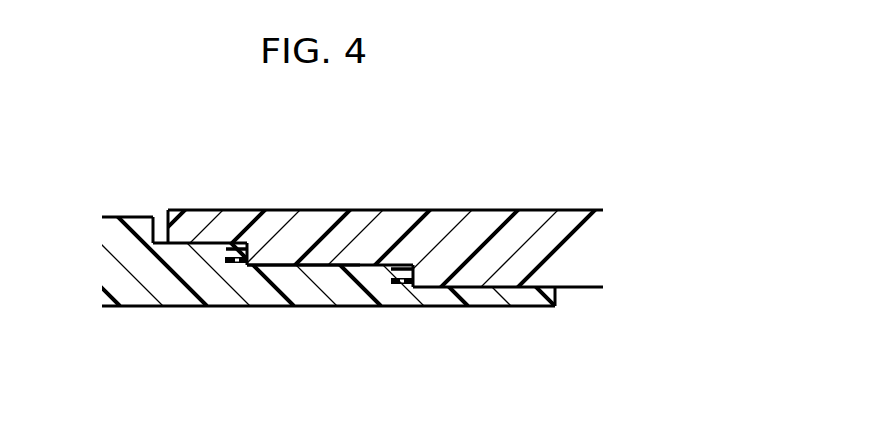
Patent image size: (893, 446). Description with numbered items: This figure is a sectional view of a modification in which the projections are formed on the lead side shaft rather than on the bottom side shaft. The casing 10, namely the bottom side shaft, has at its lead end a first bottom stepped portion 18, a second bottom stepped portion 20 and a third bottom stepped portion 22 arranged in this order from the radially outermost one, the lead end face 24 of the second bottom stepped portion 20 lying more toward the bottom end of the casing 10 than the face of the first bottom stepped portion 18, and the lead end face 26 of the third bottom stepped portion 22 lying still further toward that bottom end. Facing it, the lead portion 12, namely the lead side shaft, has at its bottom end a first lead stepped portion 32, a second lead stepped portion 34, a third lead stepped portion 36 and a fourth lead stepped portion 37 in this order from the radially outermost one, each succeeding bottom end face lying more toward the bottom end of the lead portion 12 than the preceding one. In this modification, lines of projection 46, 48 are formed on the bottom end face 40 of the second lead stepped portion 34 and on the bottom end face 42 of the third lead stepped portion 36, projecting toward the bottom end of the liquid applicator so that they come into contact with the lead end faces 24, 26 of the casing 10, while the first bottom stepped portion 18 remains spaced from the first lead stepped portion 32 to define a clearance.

The casing 10 is at (542, 209).
The lead portion 12 is at (143, 309).
The first bottom stepped portion 18 is at (177, 230).
The second bottom stepped portion 20 is at (295, 252).
The third bottom stepped portion 22 is at (485, 277).
The lead end face of the second bottom stepped portion 24 is at (231, 249).
The lead end face of the third bottom stepped portion 26 is at (404, 265).
The first lead stepped portion 32 is at (118, 229).
The second lead stepped portion 34 is at (189, 250).
The third lead stepped portion 36 is at (328, 274).
The fourth lead stepped portion 37 is at (537, 303).
The bottom end face of the second lead stepped portion 40 is at (240, 264).
The bottom end face of the third lead stepped portion 42 is at (401, 288).
The line of projection 46 is at (250, 270).
The line of projection 48 is at (417, 302).